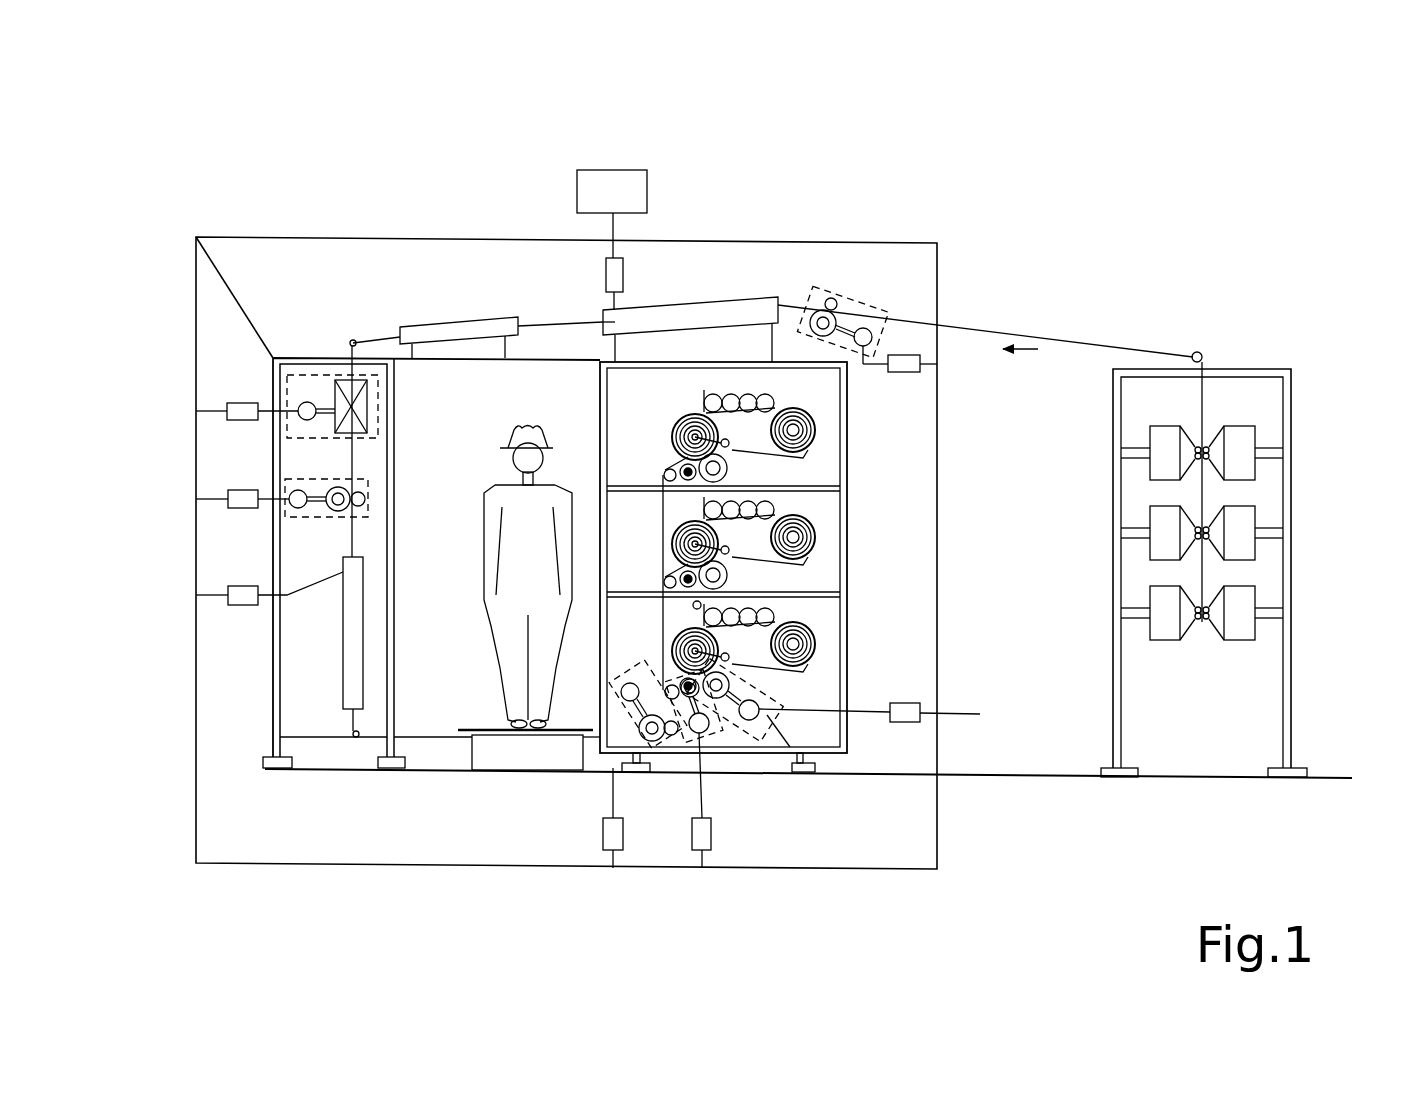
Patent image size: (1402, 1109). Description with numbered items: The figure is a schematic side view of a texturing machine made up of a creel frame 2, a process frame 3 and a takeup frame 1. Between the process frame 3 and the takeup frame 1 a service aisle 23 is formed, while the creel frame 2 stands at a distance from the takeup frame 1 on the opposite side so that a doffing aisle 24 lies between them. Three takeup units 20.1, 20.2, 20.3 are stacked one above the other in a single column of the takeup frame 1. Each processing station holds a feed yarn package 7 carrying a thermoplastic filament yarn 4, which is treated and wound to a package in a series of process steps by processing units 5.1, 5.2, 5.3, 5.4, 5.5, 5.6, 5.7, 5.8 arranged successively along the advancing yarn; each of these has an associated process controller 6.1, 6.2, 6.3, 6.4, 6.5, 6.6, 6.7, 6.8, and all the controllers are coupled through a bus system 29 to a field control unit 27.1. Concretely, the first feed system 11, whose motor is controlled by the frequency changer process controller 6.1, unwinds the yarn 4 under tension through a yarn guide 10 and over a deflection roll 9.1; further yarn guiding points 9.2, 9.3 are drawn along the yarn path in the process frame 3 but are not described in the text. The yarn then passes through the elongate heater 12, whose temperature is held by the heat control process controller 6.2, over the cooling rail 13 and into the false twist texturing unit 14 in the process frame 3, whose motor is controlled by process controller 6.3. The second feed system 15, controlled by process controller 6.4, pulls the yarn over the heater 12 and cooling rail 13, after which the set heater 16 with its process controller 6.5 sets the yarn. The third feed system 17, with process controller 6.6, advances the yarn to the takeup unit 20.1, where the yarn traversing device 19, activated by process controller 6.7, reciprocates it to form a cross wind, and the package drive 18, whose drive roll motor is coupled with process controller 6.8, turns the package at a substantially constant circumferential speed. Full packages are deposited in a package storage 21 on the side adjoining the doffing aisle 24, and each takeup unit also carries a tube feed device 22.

The takeup frame 1 is at (832, 742).
The creel frame 2 is at (1230, 738).
The process frame 3 is at (312, 750).
The thermoplastic filament yarn 4 is at (1011, 331).
The processing unit 5.1 is at (845, 282).
The processing unit 5.2 is at (662, 286).
The processing unit 5.3 is at (304, 447).
The processing unit 5.4 is at (303, 527).
The processing unit 5.5 is at (329, 682).
The processing unit 5.6 is at (645, 768).
The processing unit 5.7 is at (690, 807).
The processing unit 5.8 is at (773, 717).
The process controller 6.1 is at (942, 378).
The process controller 6.2 is at (549, 241).
The process controller 6.3 is at (214, 363).
The process controller 6.4 is at (209, 517).
The process controller 6.5 is at (194, 634).
The process controller 6.6 is at (585, 856).
The process controller 6.7 is at (734, 881).
The process controller 6.8 is at (890, 715).
The feed yarn package 7 is at (1247, 468).
The deflection roll 9.1 is at (1201, 353).
The yarn guide 9.2 is at (352, 340).
The yarn guide 9.3 is at (354, 738).
The yarn guide 10 is at (1280, 463).
The first feed system 11 is at (858, 308).
The heater 12 is at (708, 310).
The cooling rail 13 is at (414, 327).
The false twist texturing unit 14 is at (297, 385).
The second feed system 15 is at (238, 566).
The set heater 16 is at (350, 637).
The third feed system 17 is at (627, 710).
The package drive 18 is at (777, 735).
The yarn traversing device 19 is at (760, 838).
The takeup unit 20.1 is at (817, 662).
The takeup unit 20.2 is at (817, 553).
The takeup unit 20.3 is at (817, 443).
The package storage 21 is at (893, 566).
The tube feed device 22 is at (768, 505).
The service aisle 23 is at (440, 499).
The doffing aisle 24 is at (1098, 526).
The field control unit 27.1 is at (598, 176).
The bus system 29 is at (297, 237).